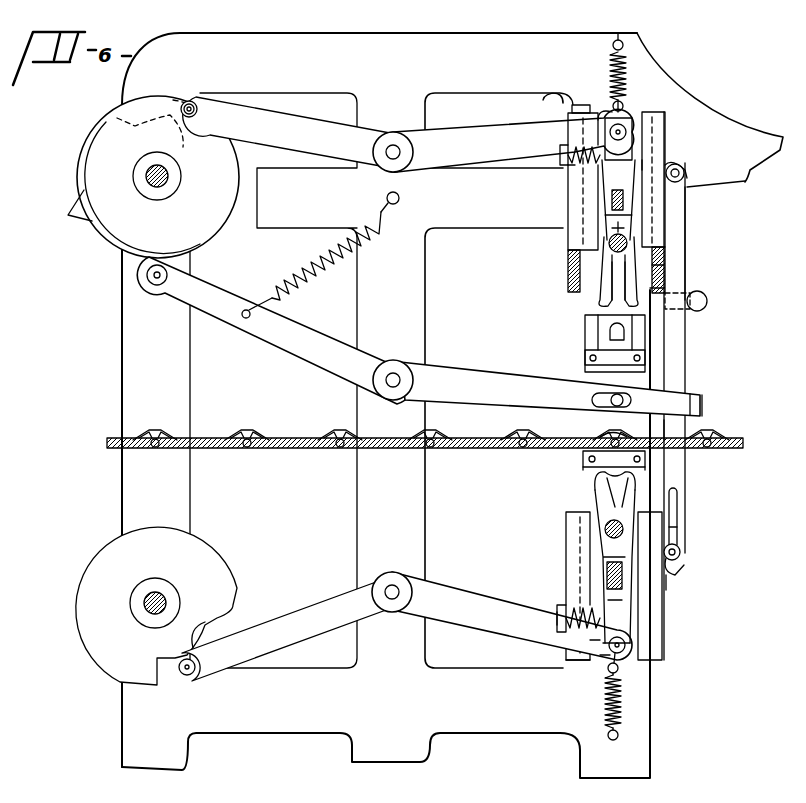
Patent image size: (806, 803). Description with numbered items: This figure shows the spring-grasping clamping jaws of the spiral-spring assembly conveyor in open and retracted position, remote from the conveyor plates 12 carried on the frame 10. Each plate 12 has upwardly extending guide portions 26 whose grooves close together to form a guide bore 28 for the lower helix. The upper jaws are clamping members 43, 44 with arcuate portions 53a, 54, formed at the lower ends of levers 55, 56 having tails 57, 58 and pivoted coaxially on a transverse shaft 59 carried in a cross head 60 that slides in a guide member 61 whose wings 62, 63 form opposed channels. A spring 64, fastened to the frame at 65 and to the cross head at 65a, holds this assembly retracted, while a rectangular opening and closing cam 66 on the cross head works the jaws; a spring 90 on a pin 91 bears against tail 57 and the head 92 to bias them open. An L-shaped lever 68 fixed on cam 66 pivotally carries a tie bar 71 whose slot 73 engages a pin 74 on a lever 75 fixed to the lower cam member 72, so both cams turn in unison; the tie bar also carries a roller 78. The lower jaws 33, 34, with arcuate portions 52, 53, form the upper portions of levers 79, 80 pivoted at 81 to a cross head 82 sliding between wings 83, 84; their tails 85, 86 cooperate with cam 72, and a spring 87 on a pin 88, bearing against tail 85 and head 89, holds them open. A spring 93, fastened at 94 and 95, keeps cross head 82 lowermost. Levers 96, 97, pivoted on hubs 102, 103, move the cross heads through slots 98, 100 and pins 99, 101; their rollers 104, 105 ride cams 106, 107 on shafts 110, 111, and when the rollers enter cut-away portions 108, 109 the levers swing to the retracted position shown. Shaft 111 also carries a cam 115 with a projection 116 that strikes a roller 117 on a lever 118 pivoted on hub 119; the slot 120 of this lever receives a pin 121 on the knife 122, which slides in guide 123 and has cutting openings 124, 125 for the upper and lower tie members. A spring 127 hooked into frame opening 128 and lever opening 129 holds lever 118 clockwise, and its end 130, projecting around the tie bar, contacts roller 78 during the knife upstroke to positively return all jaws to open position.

The frame 10 is at (740, 113).
The plates 12 is at (467, 450).
The guide portions 26 is at (440, 440).
The bore 28 is at (586, 462).
The clamping member (lower jaw) 33 is at (633, 512).
The clamping member (lower jaw) 34 is at (605, 529).
The clamping member (upper jaw) 43 is at (640, 288).
The clamping member (upper jaw) 44 is at (605, 273).
The arcuate portion 52 is at (625, 478).
The arcuate portion 53 is at (600, 472).
The arcuate portion 53a is at (690, 309).
The arcuate portion 54 is at (600, 305).
The lever 55 is at (664, 267).
The lever 56 is at (572, 262).
The tail portion 57 is at (606, 160).
The tail portion 58 is at (686, 176).
The shaft 59 is at (637, 233).
The cross head 60 is at (668, 152).
The guide member 61 is at (667, 207).
The wing 62 is at (640, 160).
The wing 63 is at (553, 96).
The spring 64 is at (630, 53).
The fastening point 65 is at (620, 40).
The fastening point 65a is at (625, 100).
The opening and closing cam 66 is at (610, 185).
The L-shaped lever 68 is at (727, 241).
The tie bar 71 is at (683, 430).
The cam member 72 is at (623, 580).
The slot 73 is at (678, 527).
The pin 74 is at (683, 550).
The lever 75 is at (677, 569).
The roller 78 is at (707, 297).
The lever 79 is at (678, 491).
The lever 80 is at (597, 480).
The pivot 81 is at (592, 535).
The cross head 82 is at (600, 598).
The wing 83 is at (668, 575).
The wing 84 is at (575, 658).
The tail portion 85 is at (593, 637).
The tail portion 86 is at (633, 638).
The spring 87 is at (572, 608).
The pin 88 is at (623, 615).
The head 89 is at (556, 618).
The spring 90 is at (570, 166).
The pin 91 is at (637, 166).
The head 92 is at (560, 152).
The spring 93 is at (627, 720).
The fastening point 94 is at (614, 740).
The fastening point 95 is at (623, 673).
The lever 96 is at (468, 580).
The lever 97 is at (458, 140).
The slot 98 is at (607, 652).
The pin 99 is at (627, 650).
The slot 100 is at (602, 107).
The pin 101 is at (628, 122).
The hub 102 is at (387, 575).
The hub 103 is at (402, 140).
The roller 104 is at (197, 680).
The roller 105 is at (187, 97).
The cam 106 is at (189, 109).
The cam 107 is at (100, 262).
The cut-away portion 108 is at (240, 550).
The cut-away portion 109 is at (171, 137).
The shaft 110 is at (157, 593).
The shaft 111 is at (150, 172).
The cam 115 is at (110, 213).
The projection 116 is at (70, 210).
The roller 117 is at (153, 298).
The lever 118 is at (303, 347).
The hub 119 is at (380, 388).
The slot 120 is at (630, 392).
The pin 121 is at (628, 400).
The knife 122 is at (607, 373).
The guide 123 is at (640, 342).
The cutting opening 124 is at (598, 325).
The cutting opening 125 is at (607, 437).
The spring 127 is at (355, 238).
The opening 128 is at (400, 199).
The opening 129 is at (244, 318).
The end 130 is at (703, 408).